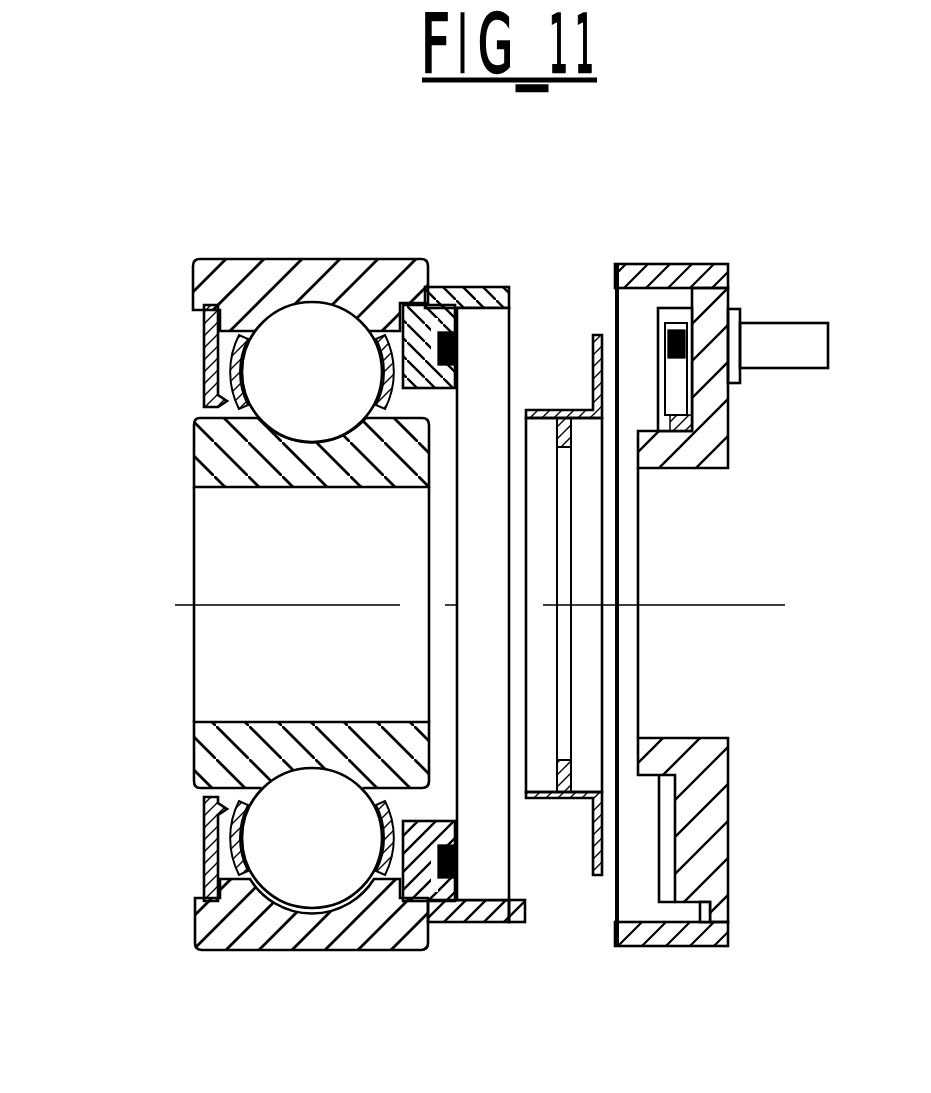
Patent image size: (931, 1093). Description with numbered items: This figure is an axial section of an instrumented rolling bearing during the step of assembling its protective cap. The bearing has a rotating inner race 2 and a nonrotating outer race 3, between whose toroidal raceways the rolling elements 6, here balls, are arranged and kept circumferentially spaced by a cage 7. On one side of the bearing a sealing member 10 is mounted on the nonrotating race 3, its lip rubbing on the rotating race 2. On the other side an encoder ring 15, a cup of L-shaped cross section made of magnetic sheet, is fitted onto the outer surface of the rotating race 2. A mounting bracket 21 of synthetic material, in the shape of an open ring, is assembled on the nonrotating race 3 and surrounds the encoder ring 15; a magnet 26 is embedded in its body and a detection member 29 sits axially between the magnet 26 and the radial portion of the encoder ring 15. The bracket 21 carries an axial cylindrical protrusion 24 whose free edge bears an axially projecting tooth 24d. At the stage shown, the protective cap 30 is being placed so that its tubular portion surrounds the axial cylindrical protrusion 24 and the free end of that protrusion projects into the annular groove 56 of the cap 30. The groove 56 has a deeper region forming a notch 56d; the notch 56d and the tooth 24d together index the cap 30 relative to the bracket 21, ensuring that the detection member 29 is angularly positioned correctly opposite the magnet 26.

The rotating inner race 2 is at (207, 447).
The nonrotating outer race 3 is at (197, 274).
The rolling elements 6 is at (307, 323).
The cage 7 is at (243, 332).
The sealing member 10 is at (204, 352).
The encoder ring 15 is at (545, 411).
The mounting bracket 21 is at (466, 287).
The axial cylindrical protrusion 24 is at (468, 925).
The tooth 24d is at (520, 925).
The magnet 26 is at (443, 335).
The detection member 29 is at (667, 342).
The protective cap 30 is at (661, 271).
The annular groove 56 is at (697, 290).
The notch 56d is at (710, 913).